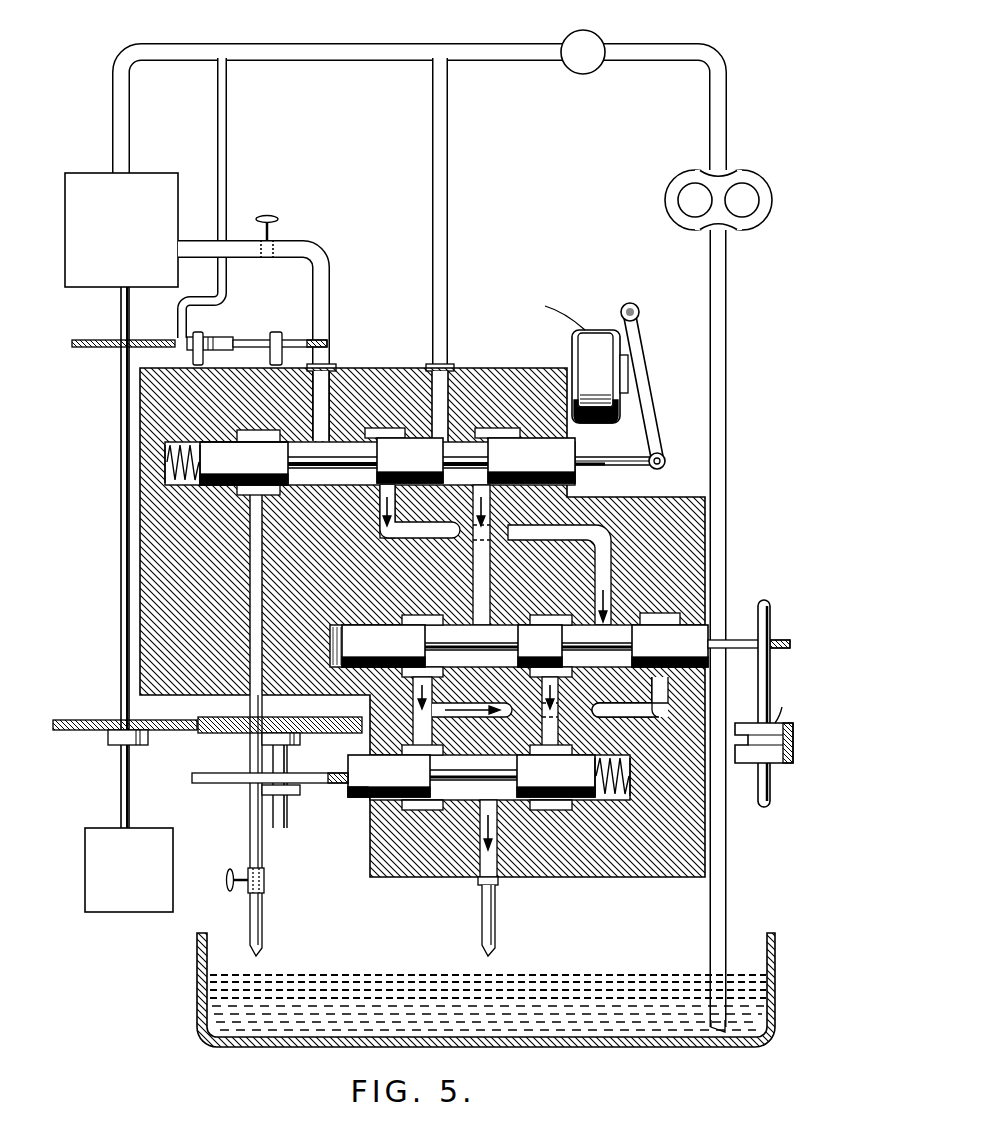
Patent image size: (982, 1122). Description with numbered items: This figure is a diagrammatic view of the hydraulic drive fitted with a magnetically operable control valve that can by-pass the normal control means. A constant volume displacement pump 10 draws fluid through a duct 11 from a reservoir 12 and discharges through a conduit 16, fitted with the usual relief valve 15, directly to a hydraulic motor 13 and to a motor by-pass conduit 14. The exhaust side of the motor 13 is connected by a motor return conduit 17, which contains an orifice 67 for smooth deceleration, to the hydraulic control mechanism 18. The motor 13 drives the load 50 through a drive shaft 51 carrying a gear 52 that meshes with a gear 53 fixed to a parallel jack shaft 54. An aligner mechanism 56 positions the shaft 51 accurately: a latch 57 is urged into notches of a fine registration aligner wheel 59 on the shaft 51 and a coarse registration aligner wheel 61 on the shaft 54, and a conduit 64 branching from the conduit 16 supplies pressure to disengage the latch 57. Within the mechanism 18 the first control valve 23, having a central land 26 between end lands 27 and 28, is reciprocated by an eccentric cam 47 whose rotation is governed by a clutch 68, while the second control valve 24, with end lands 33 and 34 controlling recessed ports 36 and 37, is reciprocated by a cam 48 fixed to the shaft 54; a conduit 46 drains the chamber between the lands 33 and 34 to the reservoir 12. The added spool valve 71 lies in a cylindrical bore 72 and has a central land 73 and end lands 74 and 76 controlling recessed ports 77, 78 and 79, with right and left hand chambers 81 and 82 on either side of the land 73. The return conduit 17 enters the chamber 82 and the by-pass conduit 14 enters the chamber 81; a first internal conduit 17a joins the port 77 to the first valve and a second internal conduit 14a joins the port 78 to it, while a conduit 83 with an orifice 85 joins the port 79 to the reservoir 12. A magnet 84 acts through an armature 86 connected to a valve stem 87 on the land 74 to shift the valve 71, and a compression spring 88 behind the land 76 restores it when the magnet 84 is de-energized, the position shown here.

The constant volume displacement pump 10 is at (678, 180).
The duct 11 is at (728, 416).
The reservoir 12 is at (780, 958).
The hydraulic motor 13 is at (83, 175).
The motor by-pass conduit 14 is at (449, 213).
The second internal conduit 14a is at (490, 575).
The relief valve 15 is at (605, 68).
The conduit 16 is at (513, 43).
The motor return conduit 17 is at (333, 305).
The first internal conduit 17a is at (604, 524).
The hydraulic control mechanism 18 is at (532, 366).
The first control valve 23 is at (721, 657).
The second control valve 24 is at (338, 796).
The central land 26 is at (575, 646).
The end land 27 is at (670, 646).
The end land 28 is at (430, 646).
The end land 33 is at (573, 776).
The end land 34 is at (432, 776).
The recessed port 36 is at (560, 810).
The recessed port 37 is at (422, 810).
The conduit 46 is at (497, 914).
The eccentric cam 47 is at (778, 651).
The eccentric cam 48 is at (224, 772).
The load 50 is at (173, 848).
The drive shaft 51 is at (120, 624).
The gear 52 is at (100, 719).
The gear 53 is at (222, 717).
The jack shaft 54 is at (268, 358).
The aligner mechanism 56 is at (156, 338).
The latch 57 is at (215, 337).
The fine registration aligner wheel 59 is at (82, 348).
The coarse registration aligner wheel 61 is at (291, 338).
The conduit 64 is at (217, 172).
The orifice 67 is at (280, 241).
The clutch 68 is at (786, 766).
The magnetically operated spool valve 71 is at (584, 470).
The cylindrical bore 72 is at (185, 488).
The central land 73 is at (410, 460).
The right-hand end land 74 is at (531, 460).
The left-hand end land 76 is at (244, 463).
The recessed port 77 is at (388, 430).
The recessed port 78 is at (497, 430).
The recessed port 79 is at (262, 430).
The right-hand fluid conducting chamber 81 is at (463, 440).
The left-hand fluid conducting chamber 82 is at (344, 442).
The conduit 83 is at (248, 577).
The magnet 84 is at (588, 330).
The orifice 85 is at (262, 893).
The armature 86 is at (649, 383).
The valve stem 87 is at (595, 457).
The compression spring 88 is at (168, 460).